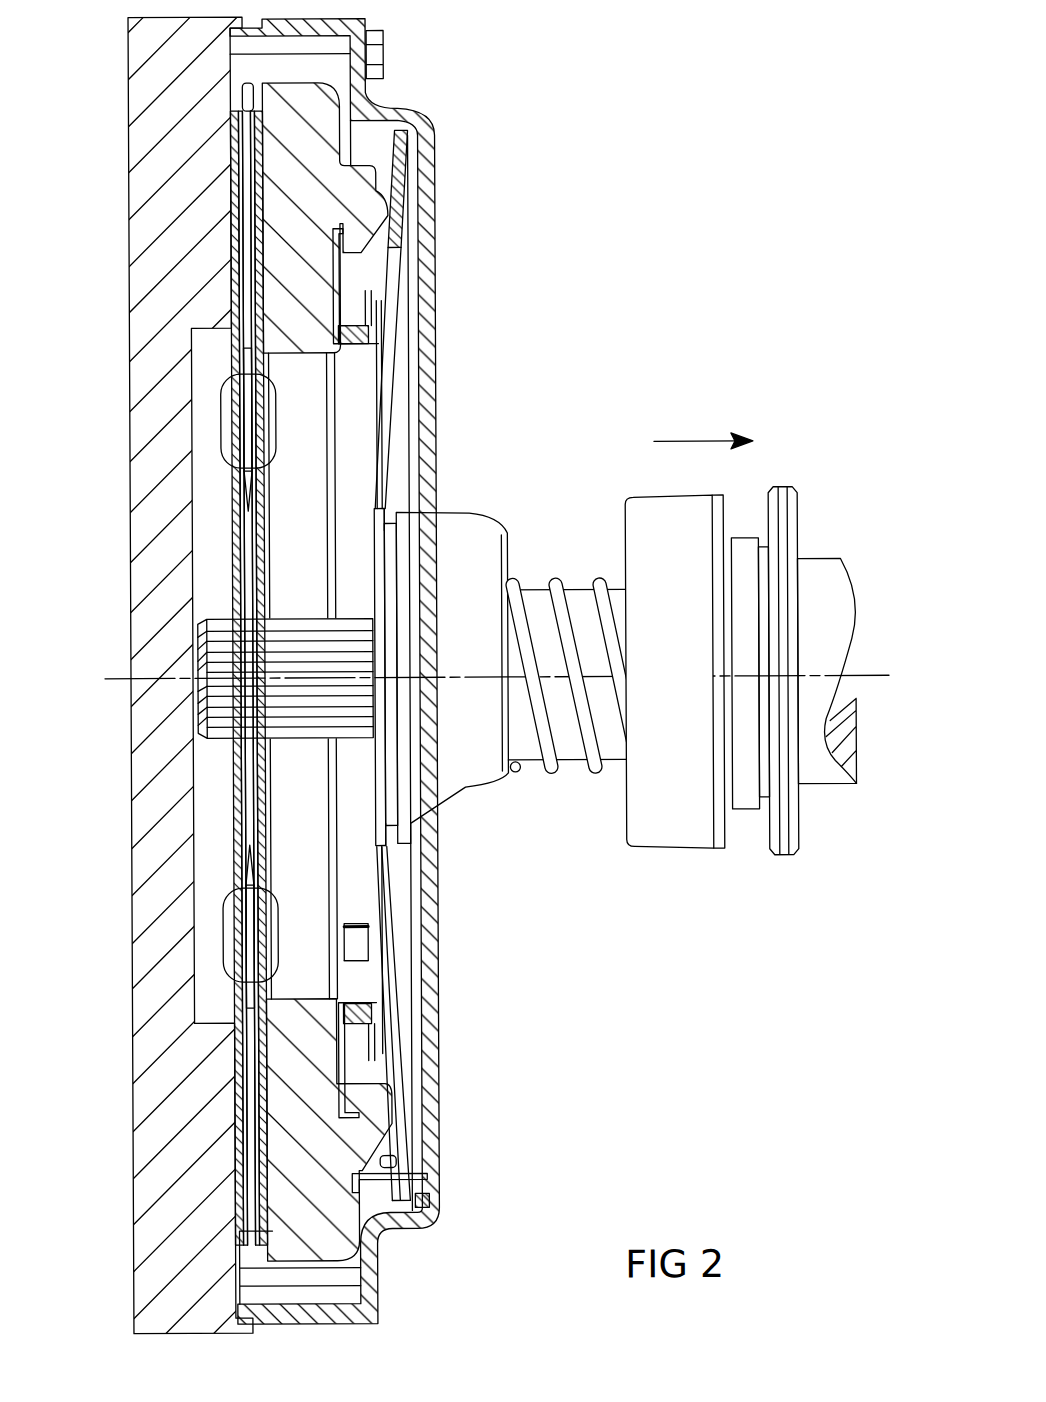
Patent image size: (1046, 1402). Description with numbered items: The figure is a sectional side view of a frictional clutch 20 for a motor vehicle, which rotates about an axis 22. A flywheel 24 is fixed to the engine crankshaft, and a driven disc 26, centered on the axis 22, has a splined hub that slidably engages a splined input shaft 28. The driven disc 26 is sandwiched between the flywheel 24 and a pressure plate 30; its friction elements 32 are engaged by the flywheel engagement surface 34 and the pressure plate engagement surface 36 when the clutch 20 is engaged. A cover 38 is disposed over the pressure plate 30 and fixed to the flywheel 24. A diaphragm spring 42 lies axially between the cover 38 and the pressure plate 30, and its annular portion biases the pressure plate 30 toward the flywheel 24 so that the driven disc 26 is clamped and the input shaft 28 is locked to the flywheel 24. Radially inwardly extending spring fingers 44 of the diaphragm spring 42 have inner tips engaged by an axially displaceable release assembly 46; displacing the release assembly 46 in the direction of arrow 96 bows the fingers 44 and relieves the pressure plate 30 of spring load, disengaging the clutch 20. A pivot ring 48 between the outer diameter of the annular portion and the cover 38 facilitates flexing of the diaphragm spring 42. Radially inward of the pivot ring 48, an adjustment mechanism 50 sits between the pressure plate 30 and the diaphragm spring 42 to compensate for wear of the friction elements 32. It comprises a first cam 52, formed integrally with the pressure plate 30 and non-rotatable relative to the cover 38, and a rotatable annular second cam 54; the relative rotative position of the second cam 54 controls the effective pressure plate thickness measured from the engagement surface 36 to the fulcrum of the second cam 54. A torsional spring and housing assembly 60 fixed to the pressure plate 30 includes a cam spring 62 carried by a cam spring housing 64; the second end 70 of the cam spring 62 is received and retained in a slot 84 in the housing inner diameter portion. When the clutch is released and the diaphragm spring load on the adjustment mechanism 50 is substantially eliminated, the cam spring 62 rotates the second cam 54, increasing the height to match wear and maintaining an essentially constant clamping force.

The frictional clutch 20 is at (540, 166).
The axis 22 is at (875, 668).
The flywheel 24 is at (131, 136).
The driven disc 26 is at (247, 108).
The input shaft 28 is at (216, 616).
The pressure plate 30 is at (343, 118).
The friction elements 32 is at (238, 110).
The flywheel engagement surface 34 is at (235, 207).
The pressure plate engagement surface 36 is at (262, 287).
The cover 38 is at (438, 272).
The diaphragm spring 42 is at (411, 1120).
The spring fingers 44 is at (402, 925).
The release assembly 46 is at (506, 528).
The pivot ring 48 is at (420, 1205).
The adjustment mechanism 50 is at (377, 1189).
The first cam 52 is at (352, 1174).
The second cam 54 is at (380, 1158).
The torsional spring and housing assembly 60 is at (372, 326).
The cam spring 62 is at (351, 1027).
The cam spring housing 64 is at (376, 370).
The second end 70 is at (358, 950).
The slot 84 is at (354, 928).
The arrow 96 is at (690, 442).